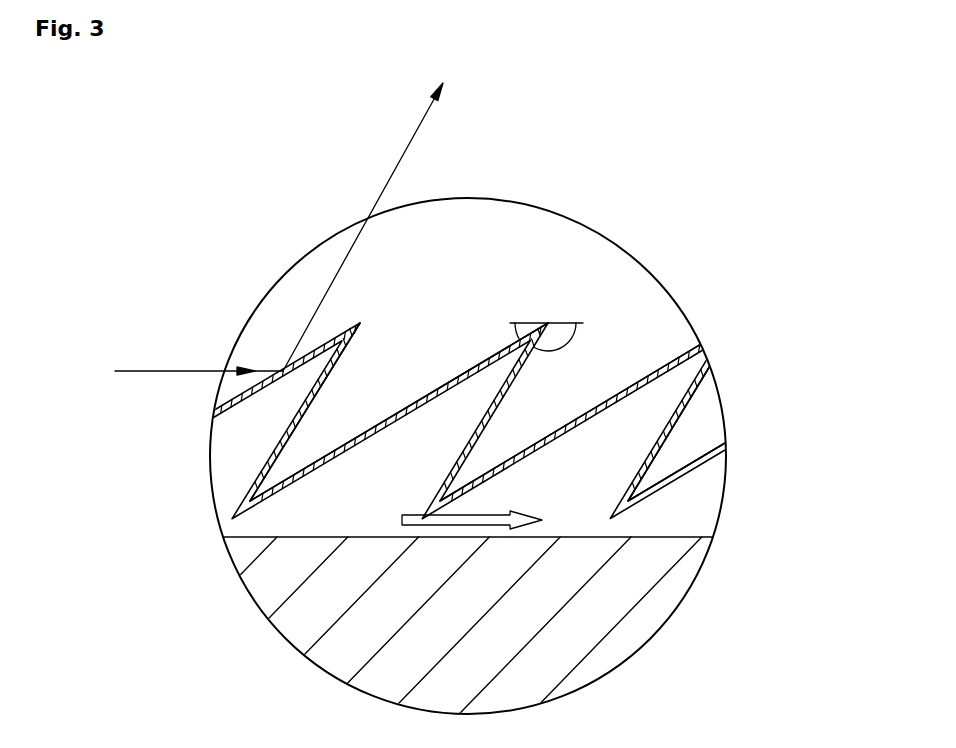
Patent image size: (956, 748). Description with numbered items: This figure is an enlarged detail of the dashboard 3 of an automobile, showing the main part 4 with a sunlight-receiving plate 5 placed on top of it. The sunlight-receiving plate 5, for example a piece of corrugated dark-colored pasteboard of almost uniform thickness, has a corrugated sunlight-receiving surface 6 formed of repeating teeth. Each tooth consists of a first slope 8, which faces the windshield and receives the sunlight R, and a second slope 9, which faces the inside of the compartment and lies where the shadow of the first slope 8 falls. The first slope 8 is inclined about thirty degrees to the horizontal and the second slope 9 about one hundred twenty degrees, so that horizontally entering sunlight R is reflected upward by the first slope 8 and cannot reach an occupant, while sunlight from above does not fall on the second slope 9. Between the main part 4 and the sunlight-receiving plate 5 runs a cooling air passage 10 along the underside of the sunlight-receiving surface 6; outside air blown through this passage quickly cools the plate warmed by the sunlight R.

The dashboard 3 is at (459, 522).
The main part 4 is at (687, 577).
The sunlight-receiving plate 5 is at (680, 470).
The sunlight-receiving surface 6 is at (650, 367).
The first slope 8 is at (462, 364).
The second slope 9 is at (346, 356).
The cooling air passage 10 is at (260, 537).
The sunlight R is at (276, 229).